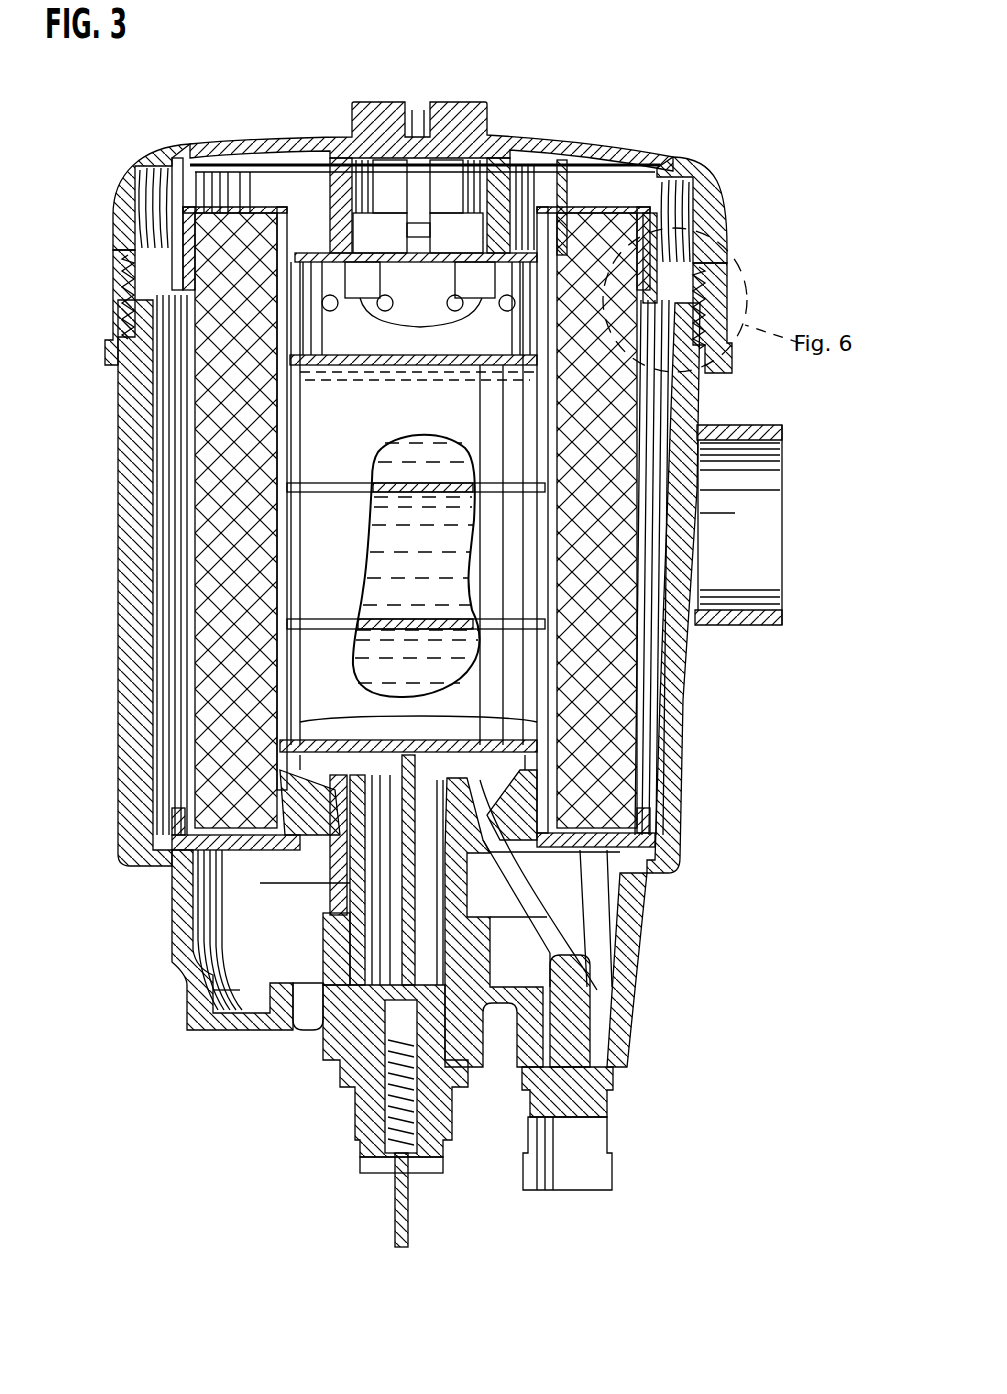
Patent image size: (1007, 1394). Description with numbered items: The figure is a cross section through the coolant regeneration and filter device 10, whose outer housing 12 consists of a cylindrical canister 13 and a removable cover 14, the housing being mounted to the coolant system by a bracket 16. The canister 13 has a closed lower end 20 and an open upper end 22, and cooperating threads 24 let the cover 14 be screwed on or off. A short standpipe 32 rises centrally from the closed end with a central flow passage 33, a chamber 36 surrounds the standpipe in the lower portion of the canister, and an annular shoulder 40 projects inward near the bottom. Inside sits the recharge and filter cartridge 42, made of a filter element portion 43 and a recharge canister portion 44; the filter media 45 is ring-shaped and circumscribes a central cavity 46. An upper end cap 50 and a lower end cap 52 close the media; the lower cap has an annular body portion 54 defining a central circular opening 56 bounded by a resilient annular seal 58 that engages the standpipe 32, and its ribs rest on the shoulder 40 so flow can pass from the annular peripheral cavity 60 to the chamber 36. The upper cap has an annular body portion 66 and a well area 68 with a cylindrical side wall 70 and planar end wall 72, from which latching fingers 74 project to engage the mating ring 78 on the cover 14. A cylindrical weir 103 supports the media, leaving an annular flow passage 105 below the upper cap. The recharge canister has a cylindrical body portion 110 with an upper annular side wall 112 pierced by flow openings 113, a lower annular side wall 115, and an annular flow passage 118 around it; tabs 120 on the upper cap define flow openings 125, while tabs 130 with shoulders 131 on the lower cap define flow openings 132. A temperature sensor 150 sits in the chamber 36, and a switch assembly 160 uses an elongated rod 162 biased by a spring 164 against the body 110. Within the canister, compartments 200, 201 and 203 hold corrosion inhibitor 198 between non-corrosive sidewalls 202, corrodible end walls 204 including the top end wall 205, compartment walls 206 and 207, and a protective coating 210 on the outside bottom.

The coolant regeneration and filter device 10 is at (803, 136).
The outer housing 12 is at (118, 200).
The cylindrical canister 13 is at (690, 700).
The removable cover 14 is at (225, 180).
The bracket 16 is at (783, 445).
The closed lower end 20 is at (215, 1020).
The open upper end 22 is at (122, 258).
The cooperating threads 24 is at (118, 330).
The standpipe 32 is at (180, 965).
The central flow passage 33 is at (620, 1015).
The chamber 36 is at (630, 965).
The annular shoulder 40 is at (160, 860).
The recharge and filter cartridge 42 is at (730, 602).
The filter element portion 43 is at (730, 558).
The recharge canister portion 44 is at (735, 525).
The filter media 45 is at (705, 350).
The central cavity 46 is at (200, 560).
The upper end cap 50 is at (670, 152).
The lower end cap 52 is at (690, 865).
The annular body portion 54 is at (660, 875).
The central circular opening 56 is at (155, 740).
The resilient annular seal 58 is at (200, 875).
The annular peripheral cavity 60 is at (720, 640).
The annular body portion 66 is at (150, 190).
The well area 68 is at (323, 205).
The cylindrical side wall 70 is at (545, 240).
The planar end wall 72 is at (415, 110).
The latching fingers 74 is at (460, 165).
The mating ring 78 is at (330, 200).
The weir 103 is at (660, 660).
The annular flow passage 105 is at (440, 140).
The cylindrical body portion 110 is at (270, 510).
The upper annular side wall 112 is at (160, 345).
The flow openings 113 is at (600, 215).
The lower annular side wall 115 is at (282, 760).
The annular flow passage 118 is at (640, 795).
The tabs 120 is at (413, 316).
The flow openings 125 is at (252, 197).
The tabs 130 is at (660, 895).
The shoulder 131 is at (185, 805).
The flow openings 132 is at (660, 752).
The temperature sensor 150 is at (632, 1100).
The switch assembly 160 is at (365, 1150).
The elongated rod 162 is at (215, 1000).
The spring 164 is at (370, 1100).
The corrosion inhibitor 198 is at (190, 535).
The compartment 200 is at (416, 541).
The compartment 201 is at (410, 528).
The sidewalls 202 is at (730, 500).
The compartment 203 is at (410, 660).
The opposing end walls 204 is at (690, 200).
The end wall 205 is at (525, 200).
The compartment wall 206 is at (195, 485).
The compartment wall 207 is at (730, 625).
The coating 210 is at (165, 900).